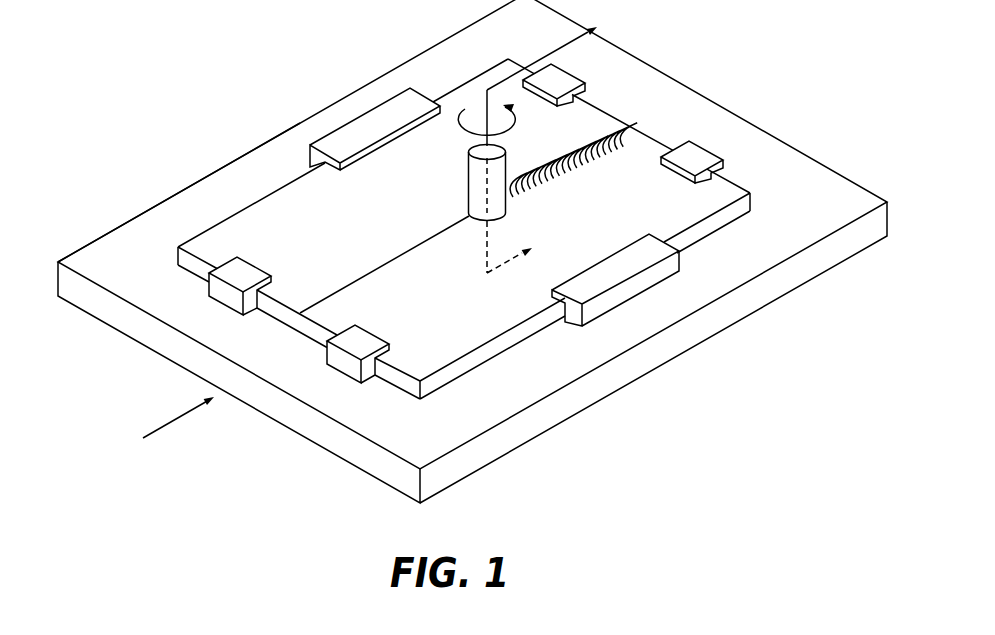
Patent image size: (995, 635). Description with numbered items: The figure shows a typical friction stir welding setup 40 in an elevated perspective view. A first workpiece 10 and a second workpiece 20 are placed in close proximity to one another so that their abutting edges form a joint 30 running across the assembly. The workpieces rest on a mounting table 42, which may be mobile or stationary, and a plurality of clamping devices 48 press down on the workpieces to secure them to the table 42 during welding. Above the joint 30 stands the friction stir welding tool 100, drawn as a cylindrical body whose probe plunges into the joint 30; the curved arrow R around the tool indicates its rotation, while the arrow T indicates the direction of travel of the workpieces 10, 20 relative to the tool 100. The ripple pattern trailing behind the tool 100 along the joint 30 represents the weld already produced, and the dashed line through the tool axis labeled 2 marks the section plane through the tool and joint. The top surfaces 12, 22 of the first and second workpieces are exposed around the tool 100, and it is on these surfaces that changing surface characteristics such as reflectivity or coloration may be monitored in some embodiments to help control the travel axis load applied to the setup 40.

The first workpiece 10 is at (211, 292).
The top surface of the first workpiece 12 is at (213, 268).
The second workpiece 20 is at (404, 388).
The top surface of the second workpiece 22 is at (398, 370).
The joint 30 is at (372, 272).
The friction stir welding setup 40 is at (731, 98).
The mounting table 42 is at (185, 190).
The clamping devices 48 is at (582, 84).
The friction stir welding tool 100 is at (468, 181).
The tool rotation R is at (463, 113).
The direction of travel T is at (178, 420).
The section line 2- 2 is at (563, 136).